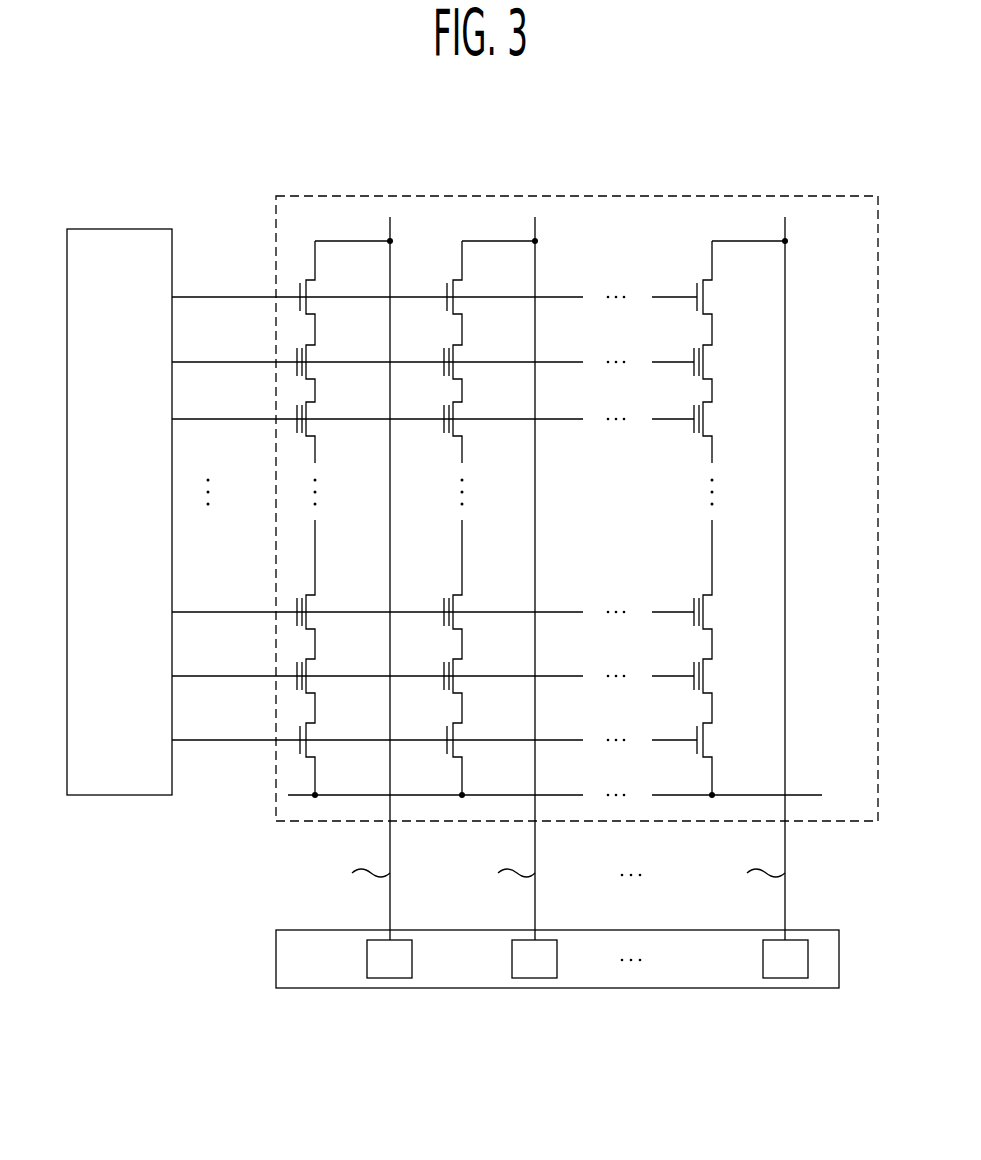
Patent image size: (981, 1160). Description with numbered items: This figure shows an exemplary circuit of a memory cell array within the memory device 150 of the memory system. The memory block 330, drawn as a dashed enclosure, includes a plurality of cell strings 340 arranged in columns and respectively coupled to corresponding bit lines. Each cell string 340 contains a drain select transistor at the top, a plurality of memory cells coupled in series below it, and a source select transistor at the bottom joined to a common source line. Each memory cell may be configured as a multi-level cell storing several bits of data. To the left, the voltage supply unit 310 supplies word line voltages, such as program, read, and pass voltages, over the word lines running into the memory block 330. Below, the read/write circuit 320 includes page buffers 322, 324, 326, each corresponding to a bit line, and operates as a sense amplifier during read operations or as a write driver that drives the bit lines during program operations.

The memory device 150 is at (862, 144).
The voltage supply unit 310 is at (118, 229).
The read/write circuit 320 is at (276, 960).
The page buffer 322 is at (367, 960).
The page buffer 324 is at (512, 960).
The page buffer 326 is at (763, 960).
The memory block 330 is at (673, 196).
The cell string 340 is at (305, 258).